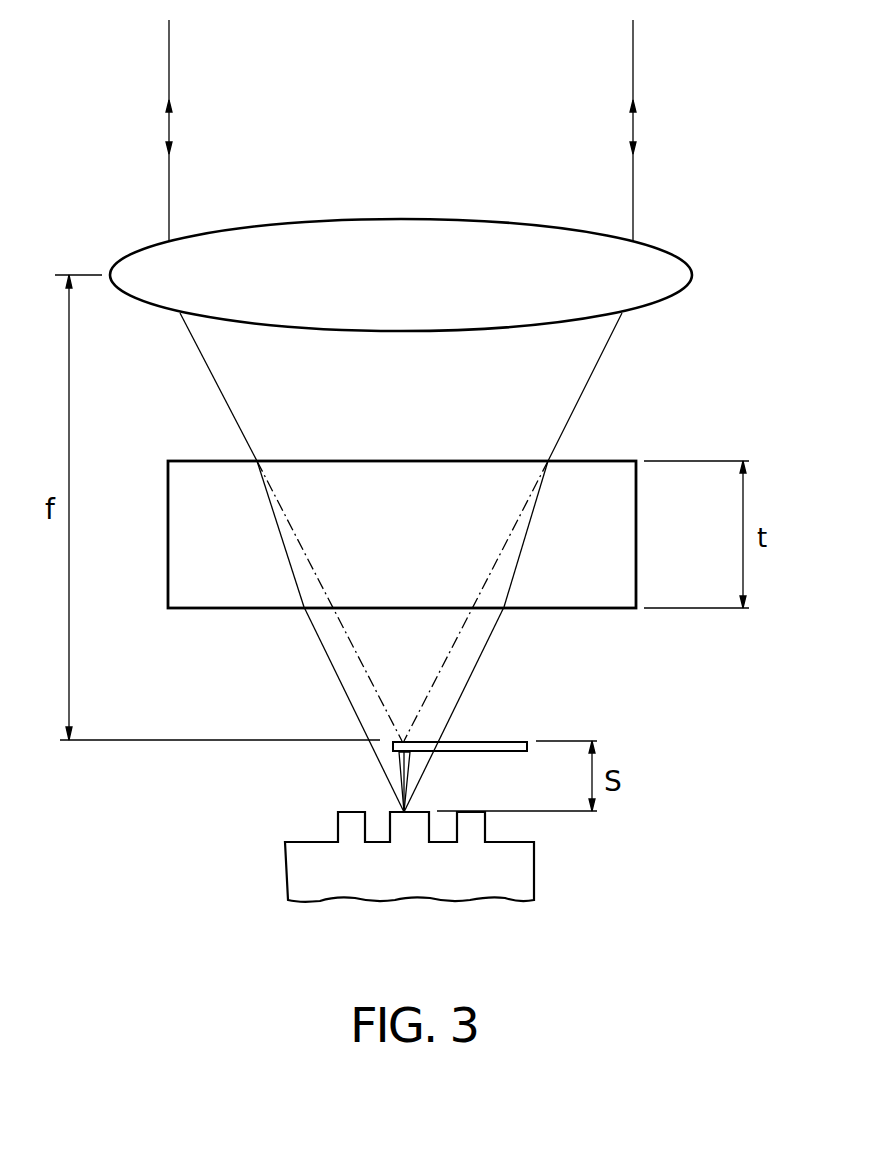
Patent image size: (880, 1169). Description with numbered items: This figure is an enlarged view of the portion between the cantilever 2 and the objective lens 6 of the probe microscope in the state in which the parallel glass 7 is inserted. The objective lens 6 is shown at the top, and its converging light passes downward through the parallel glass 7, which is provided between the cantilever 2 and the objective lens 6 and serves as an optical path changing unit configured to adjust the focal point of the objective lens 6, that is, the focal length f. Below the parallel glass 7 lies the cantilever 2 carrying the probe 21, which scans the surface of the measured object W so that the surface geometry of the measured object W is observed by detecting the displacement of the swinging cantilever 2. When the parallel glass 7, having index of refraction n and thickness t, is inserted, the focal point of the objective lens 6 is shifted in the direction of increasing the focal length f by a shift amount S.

The objective lens 6 is at (692, 275).
The parallel glass 7 is at (612, 608).
The cantilever 2 is at (489, 728).
The probe 21 is at (400, 765).
The measured object W is at (534, 860).